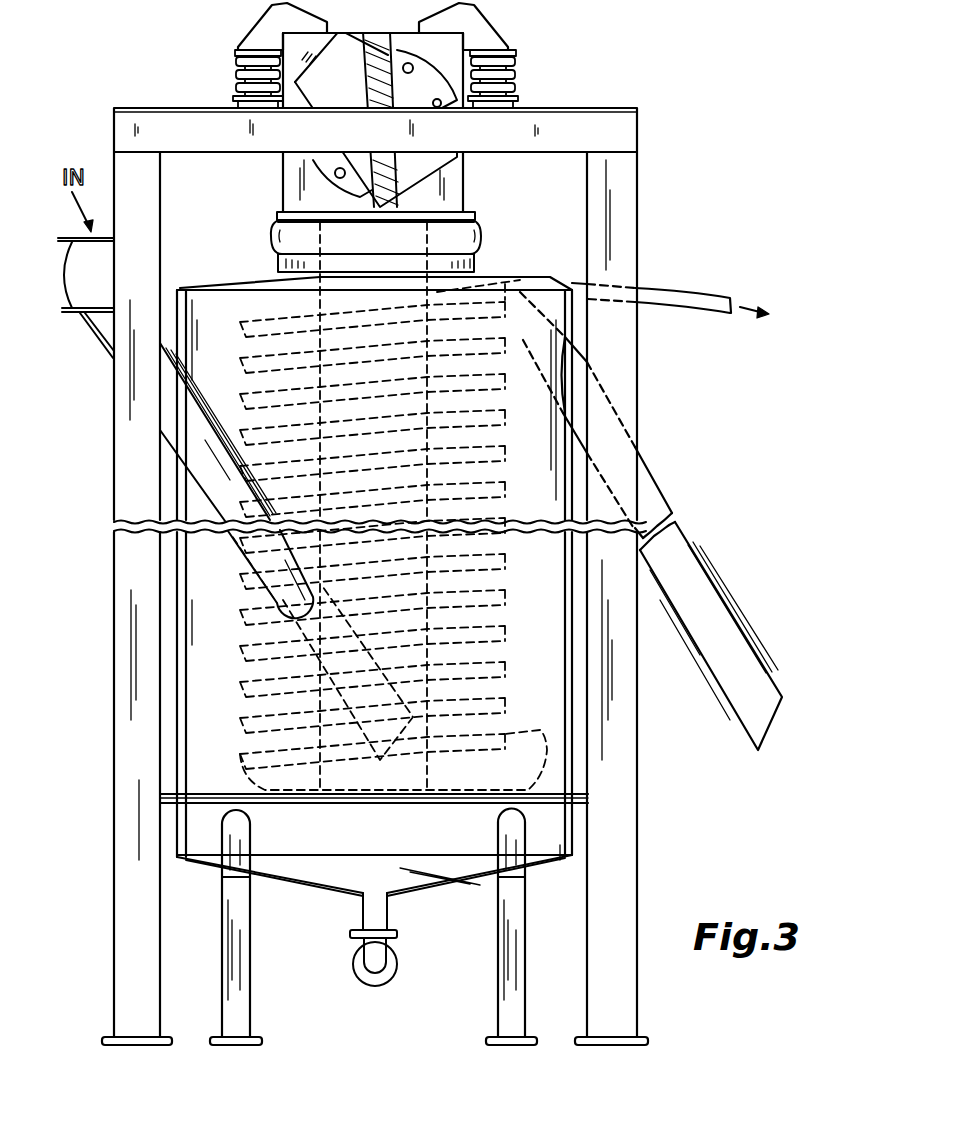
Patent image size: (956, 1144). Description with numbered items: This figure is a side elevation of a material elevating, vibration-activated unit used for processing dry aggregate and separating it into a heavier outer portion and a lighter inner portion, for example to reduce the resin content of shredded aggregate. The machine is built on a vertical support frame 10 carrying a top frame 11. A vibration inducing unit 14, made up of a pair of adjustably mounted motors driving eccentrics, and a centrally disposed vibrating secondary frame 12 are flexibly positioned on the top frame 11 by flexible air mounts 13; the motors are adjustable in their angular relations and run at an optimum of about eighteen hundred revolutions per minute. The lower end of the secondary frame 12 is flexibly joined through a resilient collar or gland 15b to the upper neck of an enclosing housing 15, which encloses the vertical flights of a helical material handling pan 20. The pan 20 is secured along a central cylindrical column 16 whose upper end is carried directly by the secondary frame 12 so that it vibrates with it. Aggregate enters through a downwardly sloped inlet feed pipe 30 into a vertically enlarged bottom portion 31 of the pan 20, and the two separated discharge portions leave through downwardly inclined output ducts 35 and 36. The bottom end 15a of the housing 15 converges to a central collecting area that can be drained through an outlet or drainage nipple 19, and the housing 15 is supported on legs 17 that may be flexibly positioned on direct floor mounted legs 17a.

The vertical support frame 10 is at (637, 796).
The top frame 11 is at (585, 118).
The secondary frame 12 is at (453, 183).
The flexible air mounts 13 is at (234, 69).
The vibration inducing unit 14 is at (398, 22).
The enclosing housing 15 is at (178, 620).
The bottom end of the housing 15a is at (334, 878).
The resilient collar or gland 15b is at (482, 237).
The central cylindrical-shaped column 16 is at (505, 462).
The legs 17 is at (228, 869).
The floor mounted legs 17a is at (246, 983).
The outlet or drainage nipple 19 is at (387, 906).
The helical material handling pan 20 is at (245, 725).
The inlet feed pipe 30 is at (67, 269).
The bottom portion of helical pan 31 is at (535, 730).
The output duct 35 is at (730, 614).
The output duct 36 is at (690, 313).